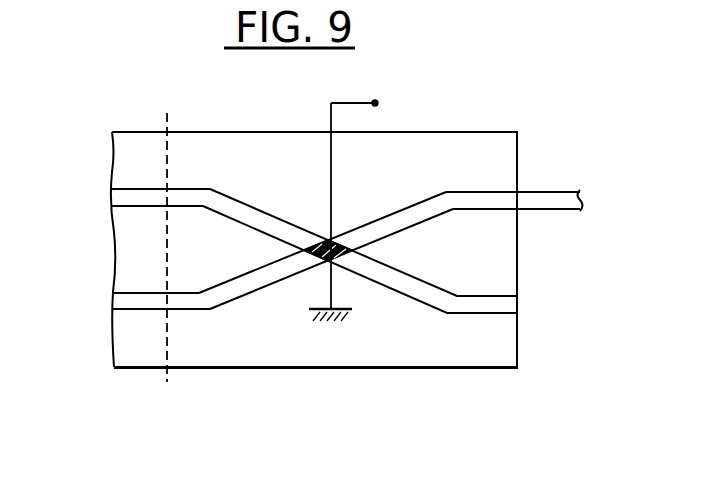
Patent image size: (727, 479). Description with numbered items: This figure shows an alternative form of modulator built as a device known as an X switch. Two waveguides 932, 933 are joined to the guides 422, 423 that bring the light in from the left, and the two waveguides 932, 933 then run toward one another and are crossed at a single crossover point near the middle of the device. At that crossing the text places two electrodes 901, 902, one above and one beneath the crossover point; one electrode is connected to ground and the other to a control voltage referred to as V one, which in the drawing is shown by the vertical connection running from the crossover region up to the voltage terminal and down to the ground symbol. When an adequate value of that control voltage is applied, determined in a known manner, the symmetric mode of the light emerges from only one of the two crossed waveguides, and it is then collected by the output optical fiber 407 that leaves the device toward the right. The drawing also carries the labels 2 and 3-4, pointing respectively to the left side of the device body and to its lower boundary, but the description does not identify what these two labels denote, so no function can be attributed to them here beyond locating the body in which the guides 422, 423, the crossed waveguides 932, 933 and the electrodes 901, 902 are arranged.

The optical device / substrate 2 is at (90, 256).
The substrate layers 3-4 is at (322, 384).
The guide 422 is at (139, 200).
The guide 423 is at (147, 297).
The waveguide 932 is at (226, 205).
The waveguide 933 is at (222, 300).
The output optical fiber 407 is at (555, 205).
The electrode 901 is at (334, 240).
The electrode 902 is at (337, 258).